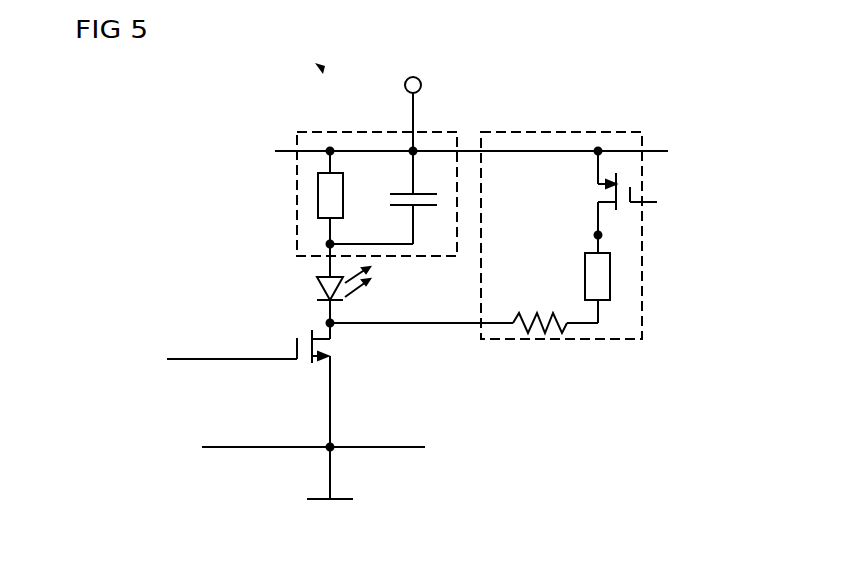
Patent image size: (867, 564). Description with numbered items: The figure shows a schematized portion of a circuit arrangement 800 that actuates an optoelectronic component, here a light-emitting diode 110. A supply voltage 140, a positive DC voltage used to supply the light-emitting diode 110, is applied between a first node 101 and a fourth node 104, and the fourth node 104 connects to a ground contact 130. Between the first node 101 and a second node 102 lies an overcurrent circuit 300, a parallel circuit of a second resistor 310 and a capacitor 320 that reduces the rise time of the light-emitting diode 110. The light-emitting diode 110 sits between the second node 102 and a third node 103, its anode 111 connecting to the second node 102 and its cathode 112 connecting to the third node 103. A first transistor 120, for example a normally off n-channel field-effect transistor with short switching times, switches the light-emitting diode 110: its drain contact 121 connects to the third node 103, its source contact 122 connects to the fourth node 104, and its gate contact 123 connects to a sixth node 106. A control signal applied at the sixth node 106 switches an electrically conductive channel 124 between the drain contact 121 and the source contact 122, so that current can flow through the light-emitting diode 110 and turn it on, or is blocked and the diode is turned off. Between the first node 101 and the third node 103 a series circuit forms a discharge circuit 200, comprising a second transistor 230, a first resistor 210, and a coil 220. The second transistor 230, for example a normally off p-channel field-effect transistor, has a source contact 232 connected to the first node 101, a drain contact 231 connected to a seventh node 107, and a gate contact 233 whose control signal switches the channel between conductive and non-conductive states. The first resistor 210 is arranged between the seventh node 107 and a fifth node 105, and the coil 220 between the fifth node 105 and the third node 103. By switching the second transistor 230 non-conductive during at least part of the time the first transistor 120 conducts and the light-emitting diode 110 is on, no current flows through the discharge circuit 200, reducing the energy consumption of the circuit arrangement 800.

The circuit arrangement 800 is at (321, 68).
The capacitor 320 is at (397, 192).
The supply voltage 140 is at (422, 85).
The discharge circuit 200 is at (535, 131).
The first node 101 is at (598, 149).
The overcurrent circuit 300 is at (297, 167).
The second resistor 310 is at (318, 200).
The second node 102 is at (330, 244).
The source contact 232 is at (598, 186).
The second transistor 230 is at (623, 182).
The gate contact 233 is at (657, 202).
The seventh node 107 is at (598, 235).
The drain contact 231 is at (644, 253).
The first resistor 210 is at (585, 277).
The anode 111 is at (327, 277).
The light-emitting diode 110 is at (328, 300).
The cathode 112 is at (335, 302).
The sixth node 106 is at (200, 358).
The gate contact 123 is at (242, 360).
The electrically conductive channel 124 is at (313, 363).
The first transistor 120 is at (302, 358).
The third node 103 is at (335, 328).
The drain contact 121 is at (330, 347).
The source contact 122 is at (332, 375).
The coil 220 is at (542, 333).
The fifth node 105 is at (597, 324).
The fourth node 104 is at (332, 448).
The ground contact 130 is at (345, 500).